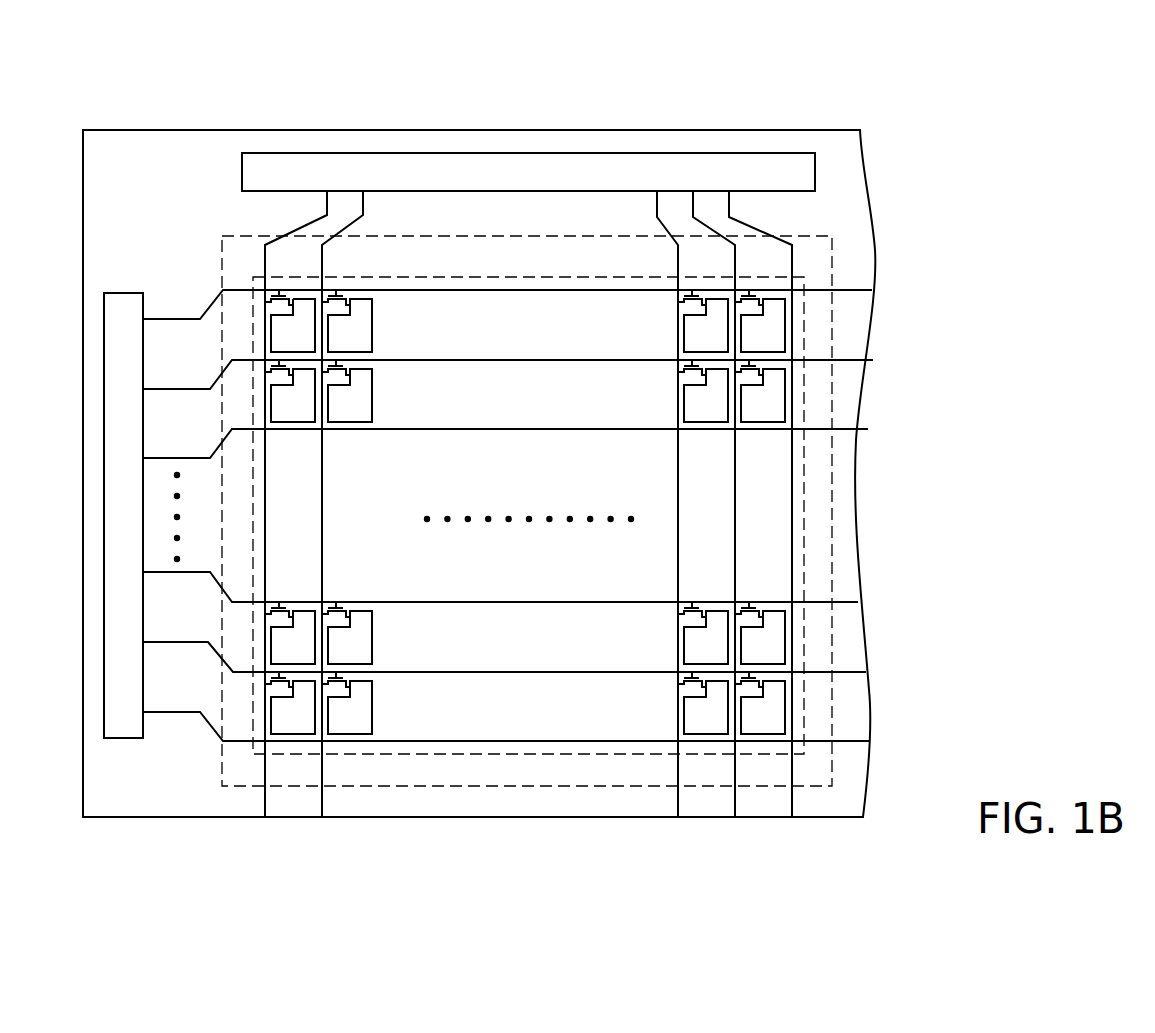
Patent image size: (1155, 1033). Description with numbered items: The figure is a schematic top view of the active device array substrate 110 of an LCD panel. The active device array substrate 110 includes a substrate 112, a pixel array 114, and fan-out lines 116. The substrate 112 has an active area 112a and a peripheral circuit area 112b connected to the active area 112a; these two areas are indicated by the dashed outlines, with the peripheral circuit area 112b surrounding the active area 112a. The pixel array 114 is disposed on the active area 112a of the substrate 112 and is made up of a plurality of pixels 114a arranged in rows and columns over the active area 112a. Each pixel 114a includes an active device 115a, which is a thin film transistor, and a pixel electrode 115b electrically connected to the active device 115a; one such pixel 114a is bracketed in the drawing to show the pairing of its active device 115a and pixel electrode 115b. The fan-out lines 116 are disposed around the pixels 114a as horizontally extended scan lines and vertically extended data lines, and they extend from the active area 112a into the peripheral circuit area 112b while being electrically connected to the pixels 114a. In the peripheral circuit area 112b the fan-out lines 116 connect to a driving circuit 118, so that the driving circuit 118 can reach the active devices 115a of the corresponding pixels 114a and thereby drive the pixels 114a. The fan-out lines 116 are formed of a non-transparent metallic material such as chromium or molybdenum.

The active device array substrate 110 is at (869, 700).
The substrate 112 is at (615, 495).
The active area 112a is at (832, 395).
The peripheral circuit area 112b is at (827, 210).
The pixel array 114 is at (491, 382).
The pixel 114a is at (256, 191).
The active device 115a is at (291, 280).
The pixel electrode 115b is at (270, 332).
The fan-out line 116 is at (730, 203).
The driving circuit 118 is at (514, 170).